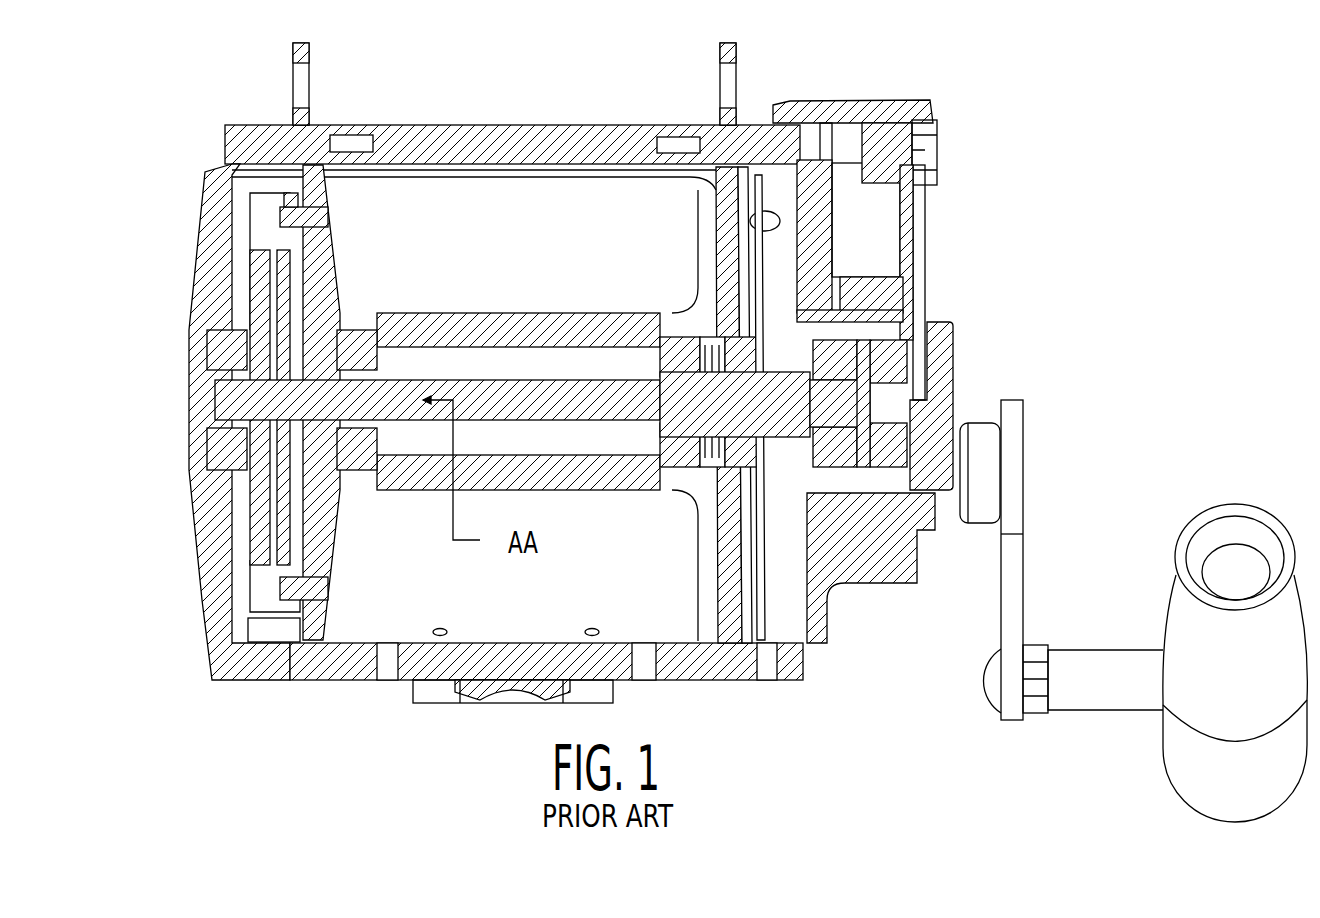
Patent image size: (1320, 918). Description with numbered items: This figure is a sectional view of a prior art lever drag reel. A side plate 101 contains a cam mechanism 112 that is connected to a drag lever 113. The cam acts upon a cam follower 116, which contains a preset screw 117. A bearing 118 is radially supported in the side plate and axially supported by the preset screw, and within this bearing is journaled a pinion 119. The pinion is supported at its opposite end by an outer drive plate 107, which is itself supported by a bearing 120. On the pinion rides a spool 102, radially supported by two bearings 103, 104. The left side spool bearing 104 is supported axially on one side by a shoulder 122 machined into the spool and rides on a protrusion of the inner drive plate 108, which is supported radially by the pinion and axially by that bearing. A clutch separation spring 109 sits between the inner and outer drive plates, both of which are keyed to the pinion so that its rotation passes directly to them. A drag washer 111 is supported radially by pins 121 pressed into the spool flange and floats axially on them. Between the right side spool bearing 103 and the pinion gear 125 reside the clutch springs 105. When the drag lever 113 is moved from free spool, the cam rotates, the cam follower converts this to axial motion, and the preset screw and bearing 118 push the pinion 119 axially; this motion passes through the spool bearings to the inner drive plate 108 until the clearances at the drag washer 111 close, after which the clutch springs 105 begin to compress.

The side plate 101 is at (807, 642).
The spool 102 is at (480, 315).
The right side spool bearing 103 is at (672, 330).
The left side spool bearing 104 is at (360, 325).
The clutch springs 105 is at (712, 352).
The outer drive plate 107 is at (238, 553).
The inner drive plate 108 is at (327, 283).
The clutch separation spring 109 is at (268, 434).
The drag washer 111 is at (287, 200).
The cam mechanism 112 is at (897, 343).
The drag lever 113 is at (913, 237).
The cam follower 116 is at (832, 322).
The preset screw 117 is at (860, 353).
The bearing 118 is at (830, 468).
The pinion 119 is at (532, 376).
The bearing 120 is at (202, 313).
The pins 121 is at (328, 215).
The shoulder 122 is at (387, 327).
The pinion gear 125 is at (740, 467).